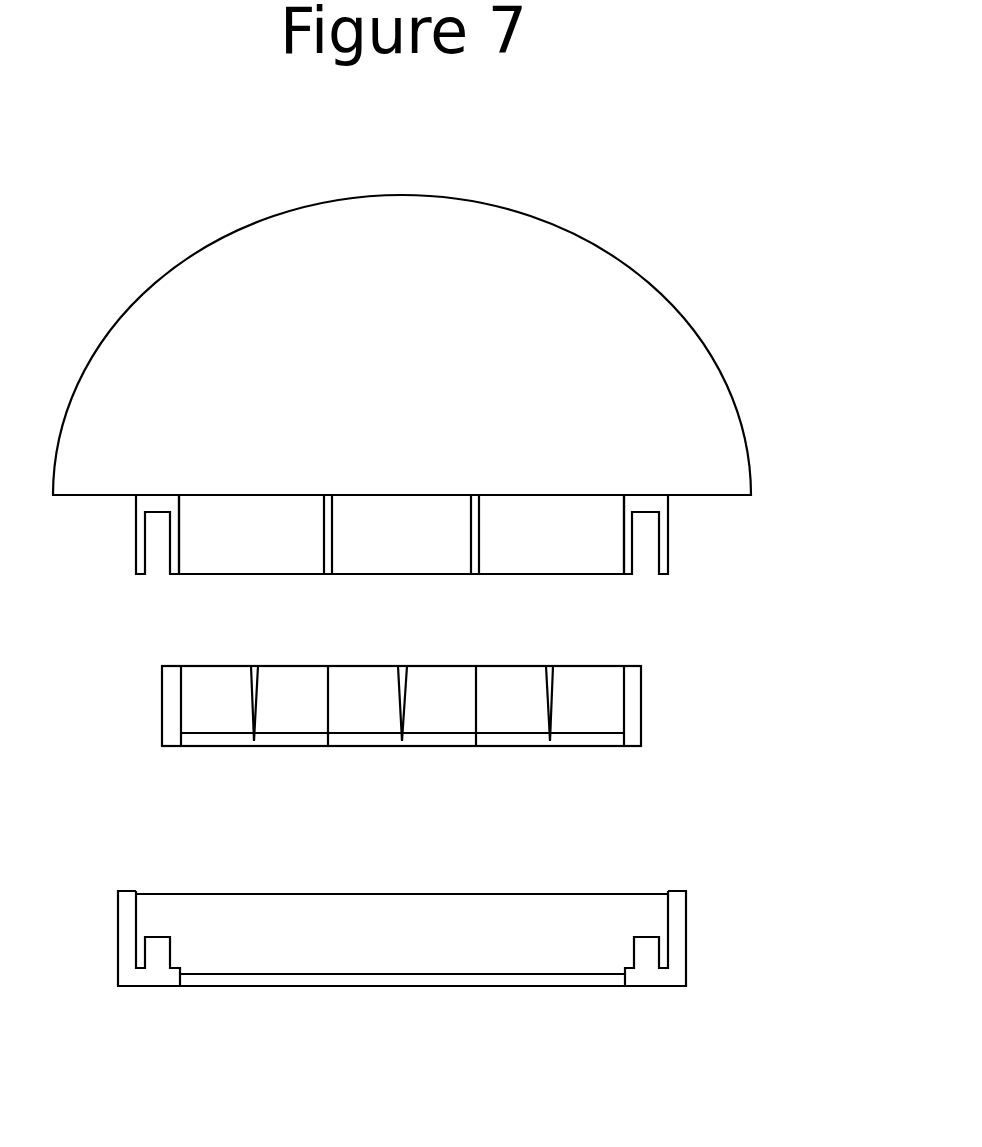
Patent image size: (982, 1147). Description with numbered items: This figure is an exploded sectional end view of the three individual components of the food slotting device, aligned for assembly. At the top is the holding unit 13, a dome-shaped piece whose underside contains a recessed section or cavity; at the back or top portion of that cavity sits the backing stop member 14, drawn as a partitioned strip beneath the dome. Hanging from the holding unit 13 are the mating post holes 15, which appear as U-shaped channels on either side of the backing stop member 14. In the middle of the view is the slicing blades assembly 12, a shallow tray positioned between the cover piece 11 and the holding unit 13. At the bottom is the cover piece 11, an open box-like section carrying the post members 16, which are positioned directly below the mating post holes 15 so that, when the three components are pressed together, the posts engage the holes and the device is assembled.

The cover piece 11 is at (262, 950).
The slicing blades assembly 12 is at (643, 727).
The holding unit 13 is at (690, 479).
The backing stop member 14 is at (543, 497).
The post holes 15 is at (163, 530).
The post members 16 is at (643, 947).